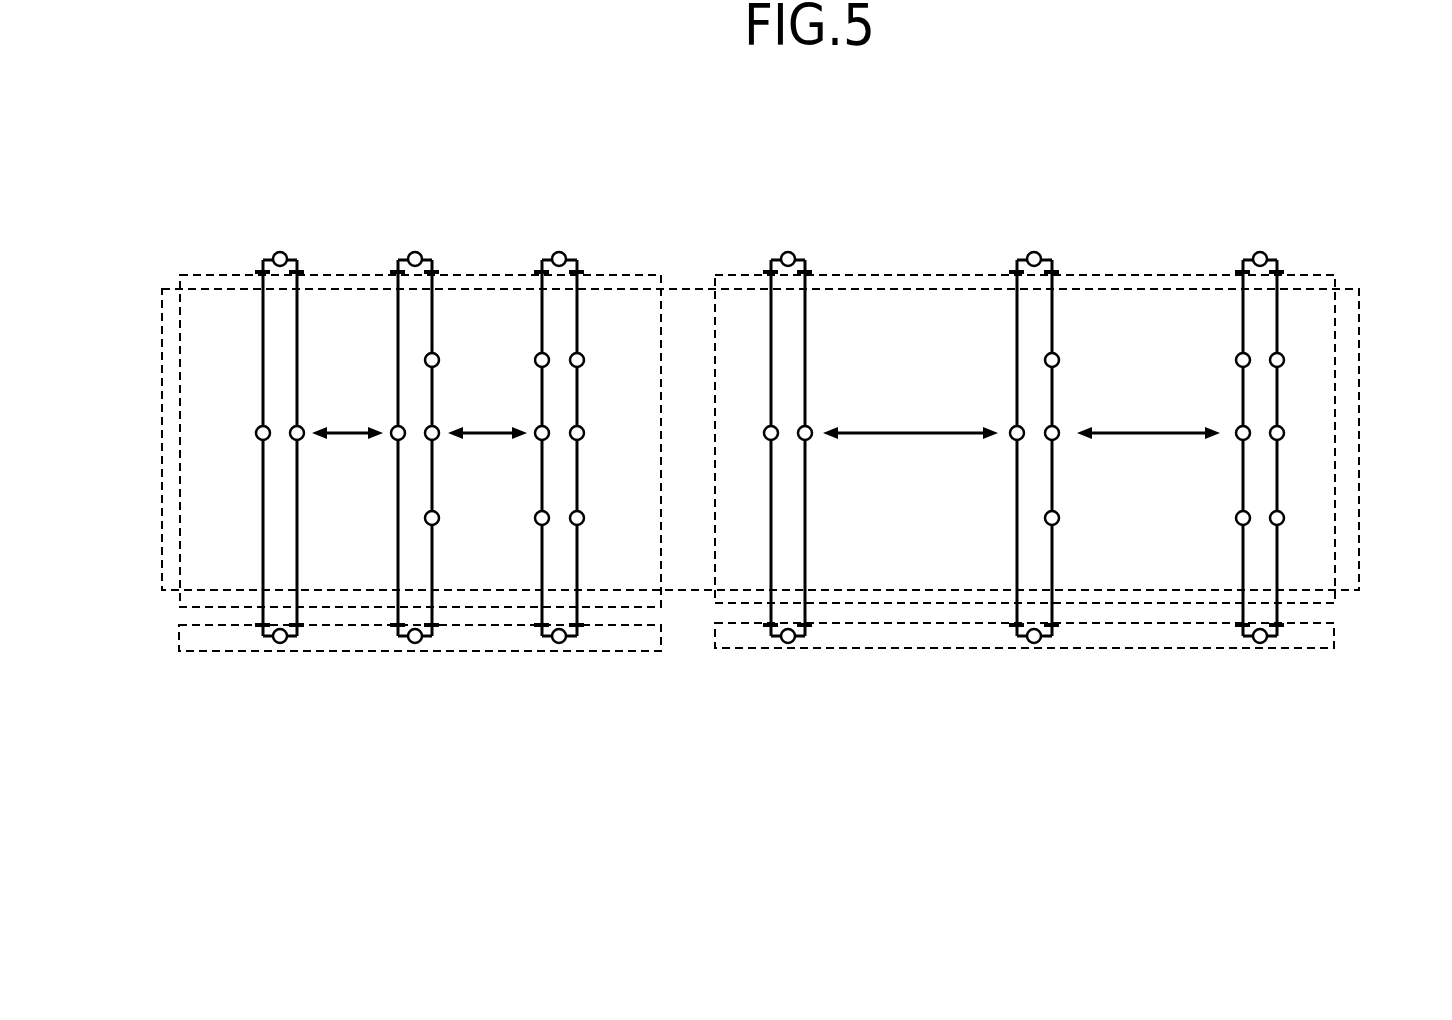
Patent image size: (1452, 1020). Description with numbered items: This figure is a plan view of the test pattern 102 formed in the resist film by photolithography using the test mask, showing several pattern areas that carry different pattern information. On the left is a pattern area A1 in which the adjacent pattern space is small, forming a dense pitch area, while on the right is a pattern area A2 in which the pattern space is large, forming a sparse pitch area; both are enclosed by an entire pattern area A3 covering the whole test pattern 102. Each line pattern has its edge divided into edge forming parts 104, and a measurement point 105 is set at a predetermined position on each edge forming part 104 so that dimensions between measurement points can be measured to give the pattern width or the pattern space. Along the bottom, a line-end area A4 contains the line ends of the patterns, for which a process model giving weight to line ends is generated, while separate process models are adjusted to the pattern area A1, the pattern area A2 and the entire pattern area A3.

The test pattern 102 is at (1025, 308).
The edge forming part 104 is at (1023, 405).
The measurement point 105 is at (1036, 217).
The pattern area A1 is at (607, 275).
The pattern area A2 is at (1320, 275).
The entire pattern area A3 is at (1360, 432).
The line-end area A4 is at (338, 651).